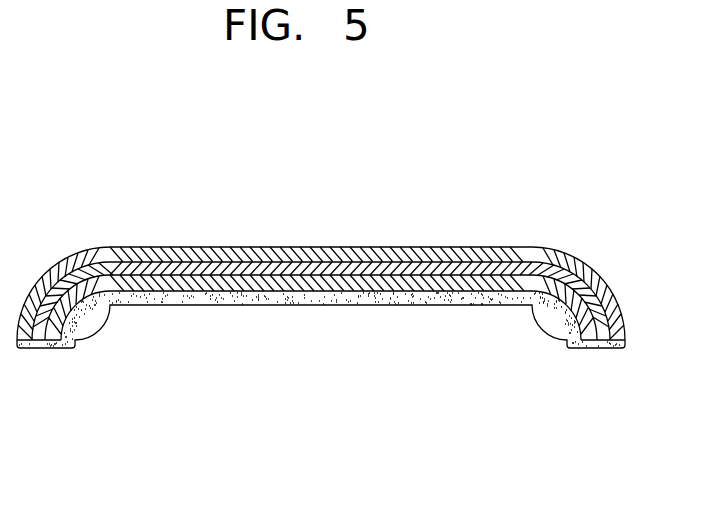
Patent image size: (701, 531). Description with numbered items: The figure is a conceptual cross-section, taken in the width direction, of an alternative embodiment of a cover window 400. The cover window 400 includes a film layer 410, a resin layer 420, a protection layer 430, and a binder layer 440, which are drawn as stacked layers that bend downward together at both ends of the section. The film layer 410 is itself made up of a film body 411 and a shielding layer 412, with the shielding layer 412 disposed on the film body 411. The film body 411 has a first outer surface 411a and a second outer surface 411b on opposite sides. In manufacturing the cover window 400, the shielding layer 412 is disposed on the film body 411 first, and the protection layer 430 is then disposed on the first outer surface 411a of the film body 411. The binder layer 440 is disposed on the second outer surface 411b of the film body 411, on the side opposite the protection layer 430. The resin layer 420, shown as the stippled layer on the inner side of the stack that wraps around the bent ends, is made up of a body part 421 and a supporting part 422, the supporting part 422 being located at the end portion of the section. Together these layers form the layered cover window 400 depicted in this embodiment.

The cover window 400 is at (80, 152).
The film layer 410 is at (573, 192).
The film body 411 is at (321, 277).
The first outer surface 411a is at (364, 263).
The second outer surface 411b is at (363, 284).
The shielding layer 412 is at (567, 260).
The resin layer 420 is at (247, 398).
The body part 421 is at (230, 295).
The supporting part 422 is at (42, 347).
The protection layer 430 is at (170, 248).
The binder layer 440 is at (441, 292).